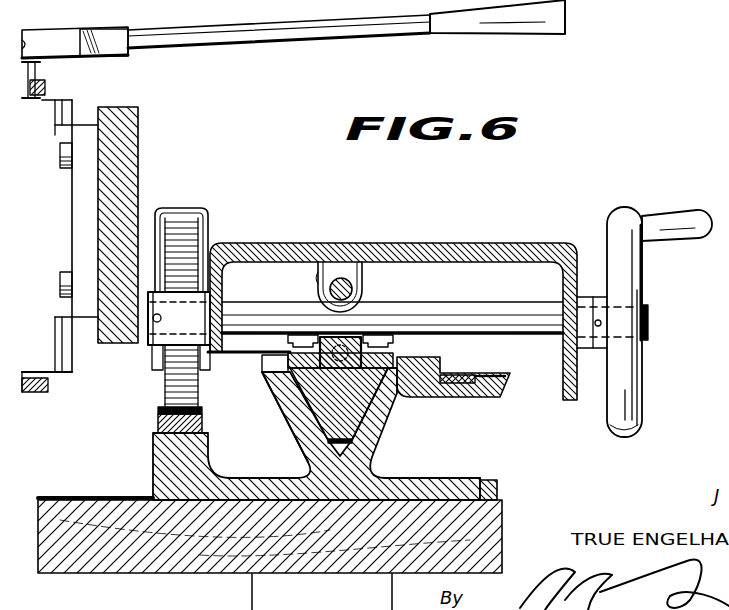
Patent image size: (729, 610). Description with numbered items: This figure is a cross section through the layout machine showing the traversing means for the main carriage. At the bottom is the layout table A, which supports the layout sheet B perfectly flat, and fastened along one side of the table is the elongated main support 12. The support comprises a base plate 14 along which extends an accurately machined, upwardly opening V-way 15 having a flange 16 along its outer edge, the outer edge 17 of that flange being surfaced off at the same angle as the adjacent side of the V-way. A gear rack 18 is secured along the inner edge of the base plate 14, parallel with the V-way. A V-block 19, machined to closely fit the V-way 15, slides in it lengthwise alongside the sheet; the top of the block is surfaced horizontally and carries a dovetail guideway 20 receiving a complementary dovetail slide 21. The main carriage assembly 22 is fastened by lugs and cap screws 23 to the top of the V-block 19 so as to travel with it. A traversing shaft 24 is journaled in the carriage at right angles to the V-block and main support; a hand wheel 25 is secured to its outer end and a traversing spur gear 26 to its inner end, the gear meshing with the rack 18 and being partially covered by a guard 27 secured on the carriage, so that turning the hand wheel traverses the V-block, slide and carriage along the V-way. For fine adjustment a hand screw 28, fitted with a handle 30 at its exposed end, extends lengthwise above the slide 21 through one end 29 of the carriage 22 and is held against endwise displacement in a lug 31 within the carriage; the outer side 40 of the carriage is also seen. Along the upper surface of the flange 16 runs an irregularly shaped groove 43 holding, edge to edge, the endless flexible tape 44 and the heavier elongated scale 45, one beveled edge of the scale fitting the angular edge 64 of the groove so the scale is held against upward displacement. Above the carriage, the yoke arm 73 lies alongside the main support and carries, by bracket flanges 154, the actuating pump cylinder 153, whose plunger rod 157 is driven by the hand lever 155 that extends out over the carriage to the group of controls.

The main support 12 is at (500, 490).
The base plate 14 is at (452, 478).
The V-way 15 is at (304, 442).
The flange 16 is at (442, 393).
The outer edge 17 is at (502, 388).
The gear rack 18 is at (157, 424).
The V-block 19 is at (302, 414).
The dovetail guideway 20 is at (318, 401).
The dovetail slide 21 is at (286, 364).
The main carriage assembly 22 is at (282, 244).
The cap screws 23 is at (340, 336).
The traversing shaft 24 is at (490, 310).
The hand wheel 25 is at (632, 208).
The traversing spur gear 26 is at (165, 386).
The guard 27 is at (178, 212).
The hand screw 28 is at (346, 263).
The end of carriage 29 is at (435, 266).
The handle 30 is at (393, 260).
The lug 31 is at (317, 273).
The outer side of carriage 40 is at (562, 400).
The groove 43 is at (467, 397).
The endless flexible tape 44 is at (497, 374).
The scale 45 is at (444, 369).
The angular edge of groove 64 is at (427, 378).
The yoke arm 73 is at (133, 160).
The actuating pump cylinder 153 is at (51, 220).
The bracket flanges 154 is at (78, 193).
The hand lever 155 is at (276, 48).
The plunger rod 157 is at (42, 70).
The layout table A is at (138, 573).
The layout sheet B is at (73, 497).